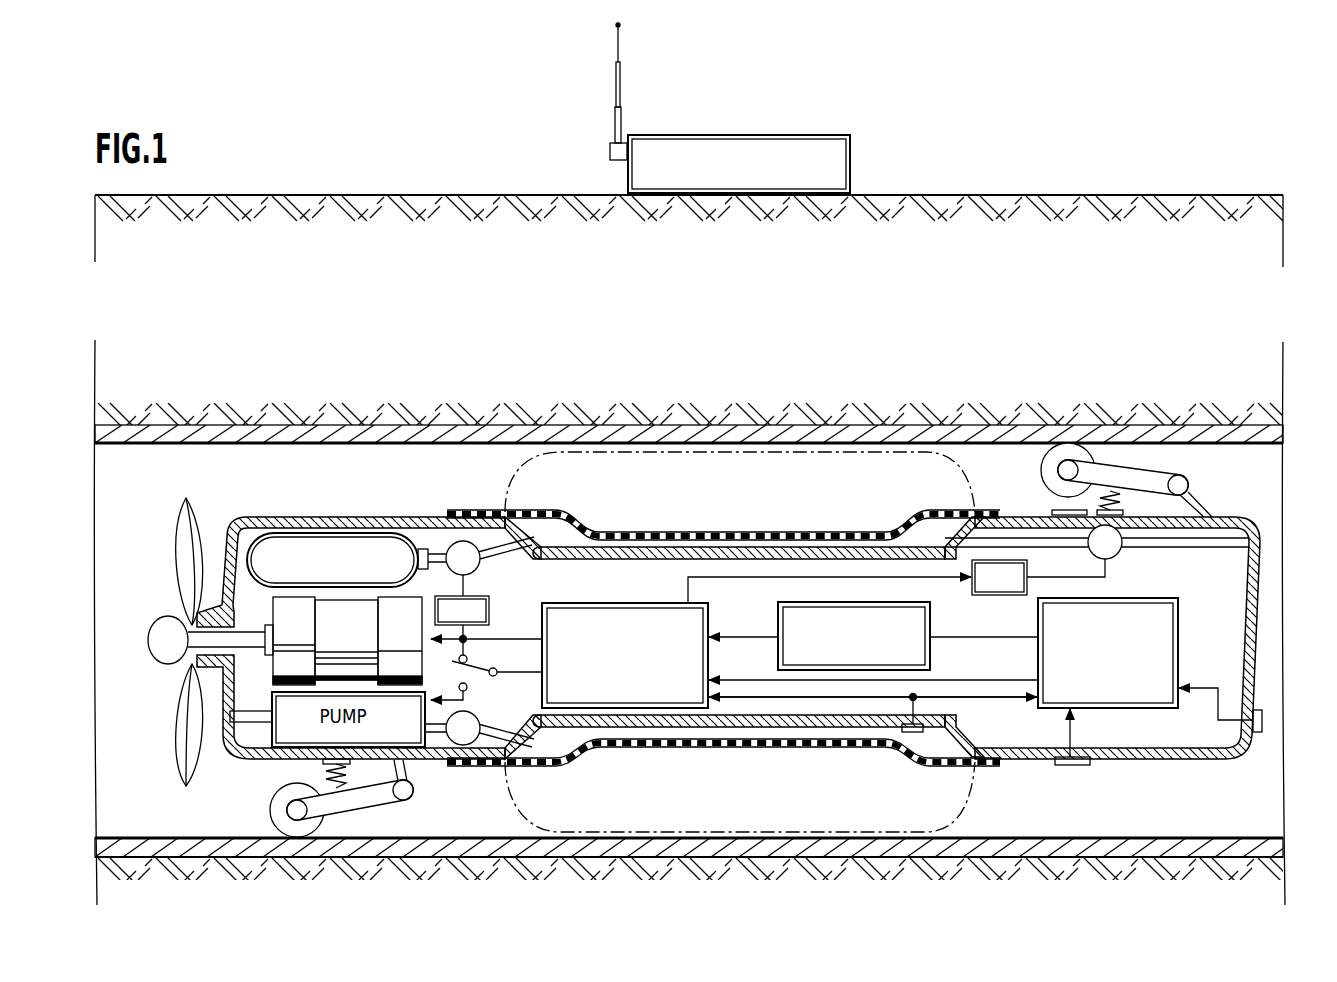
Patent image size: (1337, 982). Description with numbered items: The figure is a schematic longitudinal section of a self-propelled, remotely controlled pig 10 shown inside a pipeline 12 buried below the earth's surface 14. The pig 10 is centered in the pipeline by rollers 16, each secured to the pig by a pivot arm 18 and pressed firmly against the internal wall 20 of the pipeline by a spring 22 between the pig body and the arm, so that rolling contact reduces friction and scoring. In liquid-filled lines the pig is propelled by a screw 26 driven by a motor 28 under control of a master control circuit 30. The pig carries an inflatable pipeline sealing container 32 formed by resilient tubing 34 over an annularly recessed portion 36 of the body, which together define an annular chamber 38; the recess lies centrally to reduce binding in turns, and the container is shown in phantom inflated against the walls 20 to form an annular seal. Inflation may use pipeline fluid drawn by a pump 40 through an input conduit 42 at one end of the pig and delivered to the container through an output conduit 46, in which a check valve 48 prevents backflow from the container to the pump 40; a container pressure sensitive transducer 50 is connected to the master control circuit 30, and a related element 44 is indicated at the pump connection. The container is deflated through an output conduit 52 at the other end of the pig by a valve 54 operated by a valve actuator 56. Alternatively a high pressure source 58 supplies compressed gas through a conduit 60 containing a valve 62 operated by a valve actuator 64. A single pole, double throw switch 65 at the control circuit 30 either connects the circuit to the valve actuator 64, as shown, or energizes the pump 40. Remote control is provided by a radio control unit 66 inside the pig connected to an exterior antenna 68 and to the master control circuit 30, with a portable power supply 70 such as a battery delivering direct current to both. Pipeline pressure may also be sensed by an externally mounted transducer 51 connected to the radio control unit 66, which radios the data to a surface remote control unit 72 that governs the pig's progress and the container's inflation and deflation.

The pig 10 is at (318, 503).
The pipeline 12 is at (1028, 428).
The earth's surface 14 is at (424, 195).
The rollers 16 is at (1042, 470).
The pivot arm 18 is at (1173, 476).
The internal wall 20 is at (143, 448).
The spring 22 is at (1097, 506).
The screw 26 is at (170, 560).
The motor 28 is at (336, 648).
The master control circuit 30 is at (712, 618).
The inflatable pipeline sealing container 32 is at (785, 522).
The resilient tubing 34 is at (646, 533).
The annularly recessed portion 36 is at (697, 546).
The annular chamber 38 is at (864, 538).
The pump 40 is at (397, 698).
The input conduit 42 is at (254, 712).
The pump switch 44 is at (457, 692).
The output conduit 46 is at (441, 733).
The check valve 48 is at (477, 716).
The container pressure sensitive transducer 50 is at (908, 734).
The externally mounted transducer 51 is at (1263, 722).
The output conduit 52 is at (1174, 548).
The valve 54 is at (1119, 553).
The valve actuator 56 is at (1018, 596).
The high pressure source 58 is at (360, 536).
The conduit 60 is at (434, 530).
The valve 62 is at (481, 566).
The valve actuator 64 is at (490, 612).
The single pole, double throw switch 65 is at (477, 661).
The radio control unit 66 is at (1178, 643).
The antenna 68 is at (1088, 764).
The portable power supply 70 is at (931, 622).
The surface remote control unit 72 is at (735, 134).